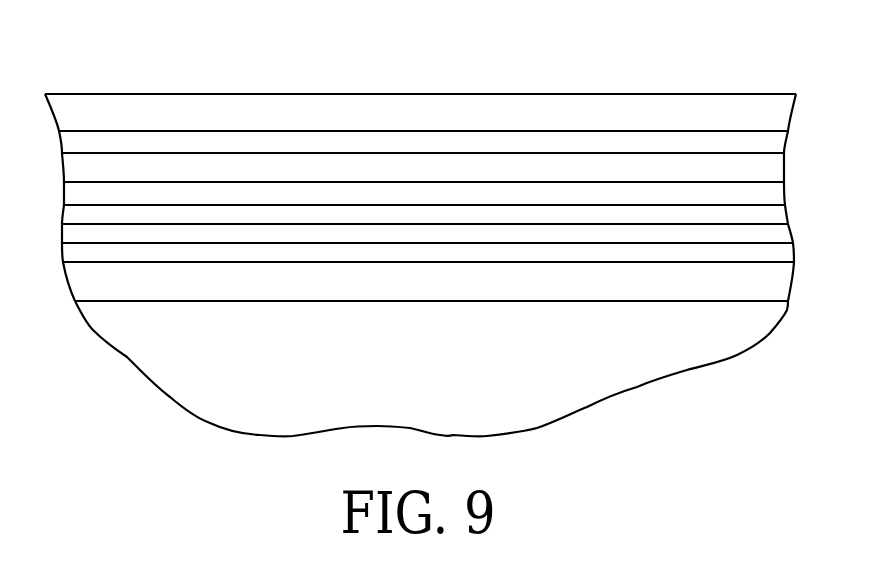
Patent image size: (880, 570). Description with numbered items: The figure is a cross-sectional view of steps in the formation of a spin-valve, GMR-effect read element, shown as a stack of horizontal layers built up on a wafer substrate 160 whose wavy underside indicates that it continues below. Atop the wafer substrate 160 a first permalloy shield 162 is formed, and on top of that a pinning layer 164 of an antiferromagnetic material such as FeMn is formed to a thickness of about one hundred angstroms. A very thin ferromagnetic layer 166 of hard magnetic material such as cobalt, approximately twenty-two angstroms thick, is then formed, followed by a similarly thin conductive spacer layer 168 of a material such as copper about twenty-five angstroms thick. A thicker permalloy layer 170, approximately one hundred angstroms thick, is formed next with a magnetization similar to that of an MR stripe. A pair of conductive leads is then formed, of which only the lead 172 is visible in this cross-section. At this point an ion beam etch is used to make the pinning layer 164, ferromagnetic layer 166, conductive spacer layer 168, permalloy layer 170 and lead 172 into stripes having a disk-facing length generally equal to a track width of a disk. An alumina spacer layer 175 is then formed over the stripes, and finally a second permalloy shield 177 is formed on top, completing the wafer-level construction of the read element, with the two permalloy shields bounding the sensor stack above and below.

The wafer substrate 160 is at (318, 414).
The first permalloy shield 162 is at (335, 302).
The pinning layer 164 is at (428, 263).
The ferromagnetic layer 166 is at (525, 245).
The conductive spacer layer 168 is at (612, 225).
The permalloy layer 170 is at (322, 183).
The conductive lead 172 is at (410, 155).
The alumina spacer layer 175 is at (508, 132).
The second permalloy shield 177 is at (600, 93).